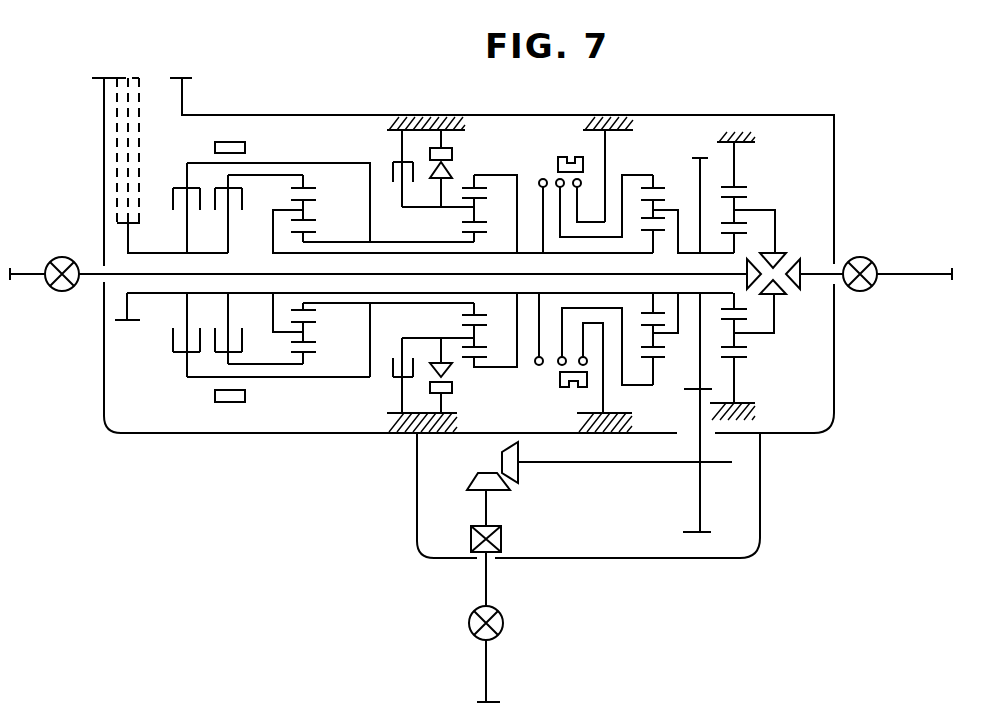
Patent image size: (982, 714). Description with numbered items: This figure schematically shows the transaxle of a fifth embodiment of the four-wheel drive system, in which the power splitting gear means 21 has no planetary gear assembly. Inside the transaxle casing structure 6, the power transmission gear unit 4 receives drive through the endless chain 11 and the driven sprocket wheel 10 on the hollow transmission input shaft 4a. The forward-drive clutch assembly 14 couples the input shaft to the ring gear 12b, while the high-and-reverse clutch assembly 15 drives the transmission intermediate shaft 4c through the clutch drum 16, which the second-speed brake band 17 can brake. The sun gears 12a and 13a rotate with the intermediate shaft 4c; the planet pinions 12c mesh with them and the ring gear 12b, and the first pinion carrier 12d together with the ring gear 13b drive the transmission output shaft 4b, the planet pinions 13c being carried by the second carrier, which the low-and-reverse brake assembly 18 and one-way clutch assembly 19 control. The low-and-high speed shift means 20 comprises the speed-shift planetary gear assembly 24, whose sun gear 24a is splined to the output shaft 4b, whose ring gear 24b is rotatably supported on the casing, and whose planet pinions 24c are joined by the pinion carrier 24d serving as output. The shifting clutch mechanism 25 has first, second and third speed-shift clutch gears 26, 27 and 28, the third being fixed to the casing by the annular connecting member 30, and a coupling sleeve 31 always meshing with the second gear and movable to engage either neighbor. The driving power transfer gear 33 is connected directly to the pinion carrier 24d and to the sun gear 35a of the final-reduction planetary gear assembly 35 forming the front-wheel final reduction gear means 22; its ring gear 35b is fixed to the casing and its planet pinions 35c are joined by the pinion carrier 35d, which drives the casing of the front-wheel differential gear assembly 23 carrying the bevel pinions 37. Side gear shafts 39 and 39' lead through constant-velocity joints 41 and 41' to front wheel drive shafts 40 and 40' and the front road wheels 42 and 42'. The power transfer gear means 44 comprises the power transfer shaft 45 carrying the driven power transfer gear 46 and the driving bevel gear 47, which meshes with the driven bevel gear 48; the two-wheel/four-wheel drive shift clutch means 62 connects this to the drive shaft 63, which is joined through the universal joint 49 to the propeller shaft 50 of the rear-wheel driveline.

The power transmission gear unit 4 is at (288, 150).
The transmission input shaft 4a is at (143, 294).
The transmission output shaft 4b is at (275, 293).
The transmission intermediate shaft 4c is at (380, 304).
The transaxle casing structure 6 is at (218, 115).
The driven sprocket wheel 10 is at (133, 238).
The endless chain 11 is at (117, 143).
The sun gear 12a is at (318, 232).
The ring gear 12b is at (318, 190).
The planet pinions 12c is at (305, 334).
The first pinion carrier 12d is at (275, 210).
The sun gear 13a is at (462, 230).
The ring gear 13b is at (466, 188).
The planet pinions 13c is at (474, 340).
The forward-drive clutch assembly 14 is at (213, 360).
The high-and-reverse clutch assembly 15 is at (168, 364).
The clutch drum 16 is at (268, 380).
The second-speed brake band 17 is at (235, 404).
The low-and-reverse brake assembly 18 is at (385, 146).
The one-way clutch assembly 19 is at (414, 150).
The low-and-high speed shift means 20 is at (608, 113).
The power splitting gear means 21 is at (707, 100).
The front-wheel final reduction gear means 22 is at (780, 108).
The front-wheel differential gear assembly 23 is at (797, 340).
The speed-shift planetary gear assembly 24 is at (663, 128).
The sun gear 24a is at (656, 312).
The ring gear 24b is at (658, 187).
The planet pinions 24c is at (662, 203).
The pinion carrier 24d is at (678, 334).
The low-and-high speed shifting clutch mechanism 25 is at (554, 140).
The first speed-shift clutch gear 26 is at (535, 365).
The second speed-shift clutch gear 27 is at (558, 368).
The third speed-shift clutch gear 28 is at (592, 372).
The annular connecting member 30 is at (607, 140).
The coupling sleeve 31 is at (560, 388).
The driving power transfer gear 33 is at (700, 172).
The final-reduction planetary gear assembly 35 is at (740, 128).
The sun gear 35a is at (748, 234).
The ring gear 35b is at (740, 186).
The planet pinions 35c is at (745, 347).
The pinion carrier 35d is at (756, 210).
The bevel pinions 37 is at (780, 257).
The side gear shaft 39 is at (410, 294).
The side gear shaft 39' is at (876, 303).
The front wheel drive shaft 40 is at (29, 256).
The front wheel drive shaft 40' is at (930, 256).
The constant-velocity joint 41 is at (54, 290).
The constant-velocity joint 41' is at (875, 288).
The front road wheel 42 is at (731, 270).
The front road wheel 42' is at (803, 295).
The power transfer gear means 44 is at (592, 525).
The power transfer shaft 45 is at (600, 463).
The driven power transfer gear 46 is at (700, 503).
The driving bevel gear 47 is at (519, 480).
The driven bevel gear 48 is at (474, 490).
The universal joint 49 is at (504, 624).
The propeller shaft 50 is at (482, 678).
The two-wheel/four-wheel drive shift clutch means 62 is at (462, 540).
The drive shaft 63 is at (484, 590).